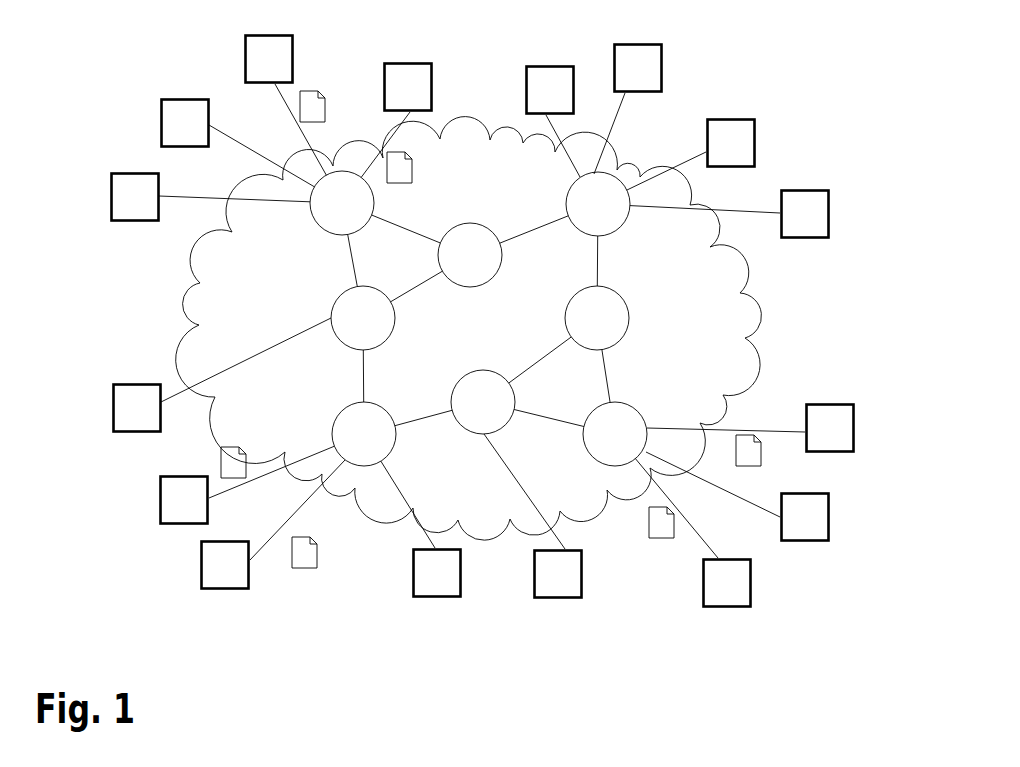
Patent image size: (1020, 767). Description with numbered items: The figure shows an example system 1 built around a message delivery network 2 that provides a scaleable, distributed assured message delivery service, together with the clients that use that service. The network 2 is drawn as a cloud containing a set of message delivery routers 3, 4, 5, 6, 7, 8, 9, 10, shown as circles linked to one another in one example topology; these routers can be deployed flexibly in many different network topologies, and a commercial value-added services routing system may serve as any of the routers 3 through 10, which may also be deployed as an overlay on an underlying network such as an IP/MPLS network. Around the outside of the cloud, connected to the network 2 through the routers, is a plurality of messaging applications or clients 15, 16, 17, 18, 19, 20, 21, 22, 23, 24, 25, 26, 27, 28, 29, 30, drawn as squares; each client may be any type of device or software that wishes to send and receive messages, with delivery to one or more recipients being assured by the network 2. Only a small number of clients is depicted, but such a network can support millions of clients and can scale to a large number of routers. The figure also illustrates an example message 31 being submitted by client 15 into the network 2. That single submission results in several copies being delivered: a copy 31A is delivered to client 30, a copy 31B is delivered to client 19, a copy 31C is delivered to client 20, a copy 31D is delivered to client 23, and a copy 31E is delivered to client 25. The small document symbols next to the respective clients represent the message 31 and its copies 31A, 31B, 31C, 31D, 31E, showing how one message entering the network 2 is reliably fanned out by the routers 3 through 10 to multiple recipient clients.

The system 1 is at (699, 668).
The message delivery network 2 is at (728, 387).
The message delivery router 3 is at (330, 238).
The message delivery router 4 is at (345, 403).
The message delivery router 5 is at (395, 318).
The message delivery router 6 is at (472, 288).
The message delivery router 7 is at (482, 371).
The message delivery router 8 is at (567, 318).
The message delivery router 9 is at (626, 225).
The message delivery router 10 is at (637, 407).
The client 15 is at (244, 38).
The client 16 is at (160, 117).
The client 17 is at (110, 190).
The client 18 is at (112, 408).
The client 19 is at (159, 503).
The client 20 is at (200, 580).
The client 21 is at (427, 598).
The client 22 is at (560, 599).
The client 23 is at (752, 597).
The client 24 is at (830, 525).
The client 25 is at (854, 432).
The client 26 is at (829, 222).
The client 27 is at (741, 118).
The client 28 is at (650, 43).
The client 29 is at (550, 65).
The client 30 is at (417, 62).
The message 31 is at (305, 91).
The message copy 31A is at (413, 167).
The message copy 31B is at (221, 462).
The message copy 31C is at (305, 568).
The message copy 31D is at (663, 537).
The message copy 31E is at (760, 455).